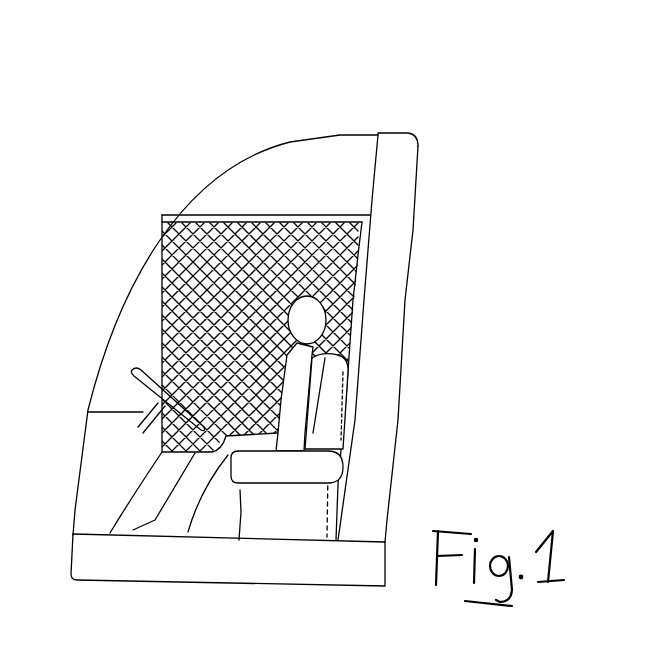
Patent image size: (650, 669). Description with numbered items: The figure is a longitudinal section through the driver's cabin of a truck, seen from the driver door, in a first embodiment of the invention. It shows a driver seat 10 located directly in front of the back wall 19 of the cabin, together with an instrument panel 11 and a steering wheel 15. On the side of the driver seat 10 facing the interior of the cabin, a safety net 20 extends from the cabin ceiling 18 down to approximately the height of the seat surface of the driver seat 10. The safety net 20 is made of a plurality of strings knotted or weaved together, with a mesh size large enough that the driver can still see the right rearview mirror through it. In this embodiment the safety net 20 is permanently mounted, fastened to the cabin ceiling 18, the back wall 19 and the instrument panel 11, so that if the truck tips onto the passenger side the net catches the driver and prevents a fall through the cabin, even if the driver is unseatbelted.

The driver seat 10 is at (318, 472).
The instrument panel 11 is at (102, 462).
The steering wheel 15 is at (155, 388).
The cabin ceiling 18 is at (270, 210).
The back wall 19 is at (363, 330).
The safety net 20 is at (340, 249).